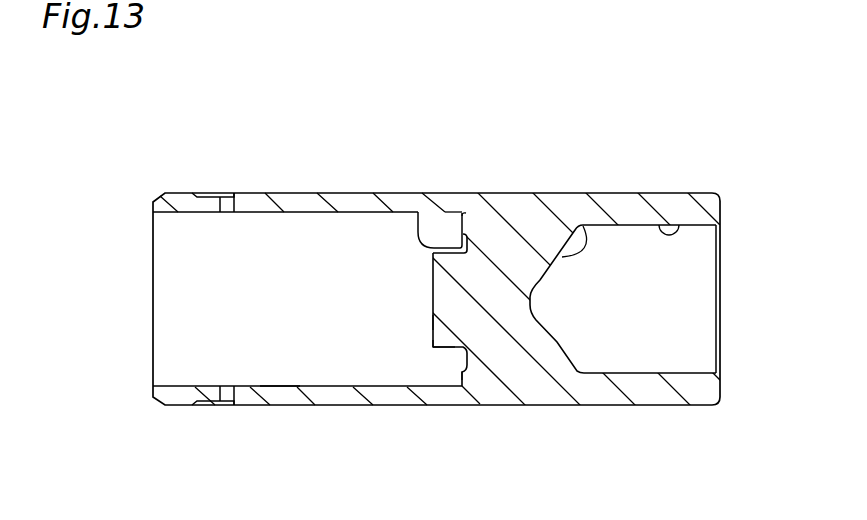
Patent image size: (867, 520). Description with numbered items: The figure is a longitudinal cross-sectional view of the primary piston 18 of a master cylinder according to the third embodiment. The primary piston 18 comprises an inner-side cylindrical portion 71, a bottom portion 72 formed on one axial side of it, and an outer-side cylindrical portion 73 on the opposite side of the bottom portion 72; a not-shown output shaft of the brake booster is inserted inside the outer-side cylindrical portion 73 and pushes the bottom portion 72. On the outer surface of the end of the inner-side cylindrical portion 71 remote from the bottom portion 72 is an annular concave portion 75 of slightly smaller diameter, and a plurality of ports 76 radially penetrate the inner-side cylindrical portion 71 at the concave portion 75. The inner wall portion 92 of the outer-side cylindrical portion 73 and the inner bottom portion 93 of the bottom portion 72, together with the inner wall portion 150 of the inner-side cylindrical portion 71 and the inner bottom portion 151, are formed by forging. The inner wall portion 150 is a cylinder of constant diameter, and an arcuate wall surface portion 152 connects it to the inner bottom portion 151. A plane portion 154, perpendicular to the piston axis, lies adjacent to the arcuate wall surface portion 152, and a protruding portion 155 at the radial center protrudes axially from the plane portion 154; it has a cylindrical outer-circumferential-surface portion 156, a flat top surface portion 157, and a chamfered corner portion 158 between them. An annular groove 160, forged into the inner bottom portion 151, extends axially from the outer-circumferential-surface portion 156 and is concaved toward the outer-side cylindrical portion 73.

The primary piston 18 is at (713, 160).
The inner-side cylindrical portion 71 is at (311, 197).
The bottom portion 72 is at (516, 244).
The outer-side cylindrical portion 73 is at (629, 204).
The annular concave portion 75 is at (205, 196).
The ports 76 is at (229, 204).
The inner wall portion 92 is at (672, 222).
The inner bottom portion 93 is at (581, 225).
The inner wall portion 150 is at (287, 386).
The inner bottom portion 151 is at (461, 373).
The arcuate wall surface portion 152 is at (461, 215).
The plane portion 154 is at (449, 213).
The protruding portion 155 is at (433, 290).
The outer-circumferential-surface portion 156 is at (445, 348).
The top surface portion 157 is at (433, 321).
The chamfered corner portion 158 is at (433, 347).
The annular groove 160 is at (420, 211).